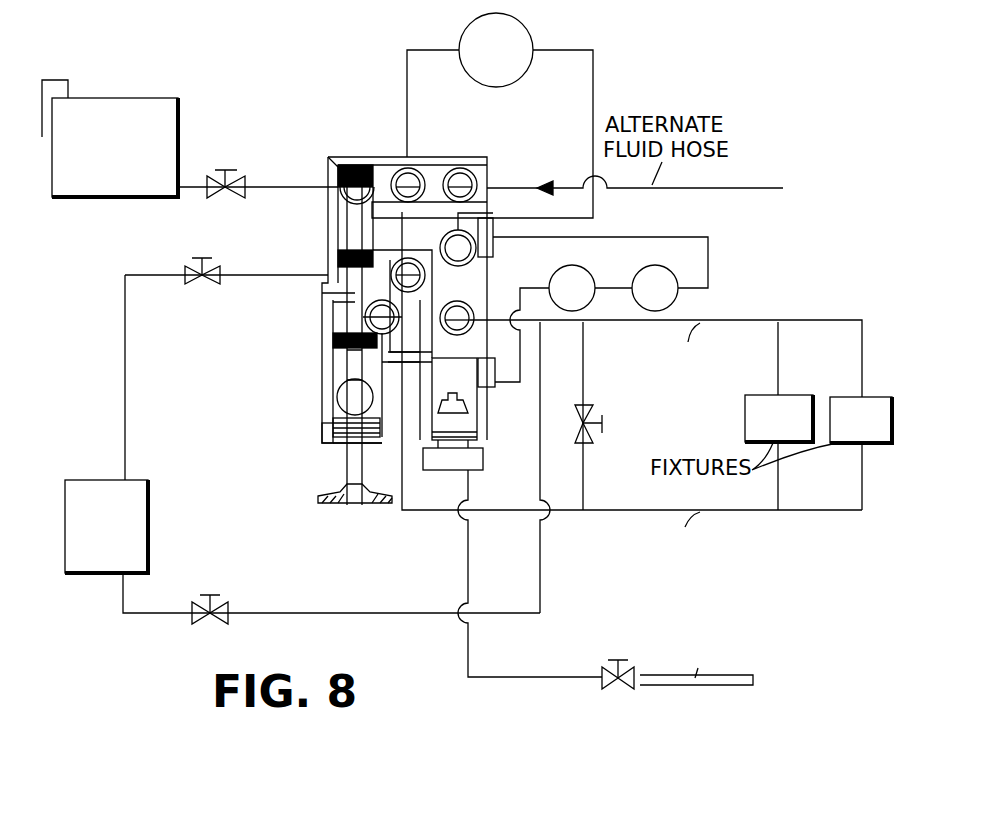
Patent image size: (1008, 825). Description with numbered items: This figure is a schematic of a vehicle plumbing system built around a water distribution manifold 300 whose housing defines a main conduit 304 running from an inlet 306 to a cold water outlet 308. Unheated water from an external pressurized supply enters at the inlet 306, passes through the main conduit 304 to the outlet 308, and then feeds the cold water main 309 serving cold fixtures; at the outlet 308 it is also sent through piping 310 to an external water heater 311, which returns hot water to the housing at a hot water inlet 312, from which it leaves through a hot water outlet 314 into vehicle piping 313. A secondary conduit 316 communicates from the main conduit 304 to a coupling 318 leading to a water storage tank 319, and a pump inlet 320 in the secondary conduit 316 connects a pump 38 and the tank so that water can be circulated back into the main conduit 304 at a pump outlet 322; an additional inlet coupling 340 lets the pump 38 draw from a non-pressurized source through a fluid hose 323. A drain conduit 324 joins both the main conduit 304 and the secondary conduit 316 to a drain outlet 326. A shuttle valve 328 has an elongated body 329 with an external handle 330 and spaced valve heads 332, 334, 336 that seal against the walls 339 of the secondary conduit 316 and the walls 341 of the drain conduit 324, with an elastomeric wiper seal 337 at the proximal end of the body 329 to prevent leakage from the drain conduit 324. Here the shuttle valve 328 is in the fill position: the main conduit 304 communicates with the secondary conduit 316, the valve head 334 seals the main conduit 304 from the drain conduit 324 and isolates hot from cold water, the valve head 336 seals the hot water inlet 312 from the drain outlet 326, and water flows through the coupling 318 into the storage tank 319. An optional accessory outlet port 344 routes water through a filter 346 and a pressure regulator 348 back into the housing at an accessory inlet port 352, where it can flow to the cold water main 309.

The pump 38 is at (515, 30).
The water distribution manifold 300 is at (478, 132).
The main conduit 304 is at (480, 430).
The inlet 306 is at (470, 460).
The cold water outlet 308 is at (462, 330).
The cold water main 309 is at (750, 320).
The piping 310 is at (540, 587).
The water heater 311 is at (148, 512).
The hot water inlet 312 is at (410, 275).
The vehicle piping 313 is at (787, 513).
The hot water outlet 314 is at (355, 320).
The secondary conduit 316 is at (383, 176).
The coupling 318 is at (338, 195).
The water storage tank 319 is at (140, 98).
The pump inlet 320 is at (408, 180).
The pump outlet 322 is at (445, 245).
The fluid hose 323 is at (745, 188).
The drain conduit 324 is at (330, 370).
The drain outlet 326 is at (340, 400).
The shuttle valve 328 is at (333, 462).
The elongated body 329 is at (357, 292).
The external handle 330 is at (358, 505).
The valve head 332 is at (332, 162).
The valve head 334 is at (338, 257).
The valve head 336 is at (333, 340).
The elastomeric wiper seal 337 is at (375, 445).
The walls of the secondary conduit 339 is at (330, 226).
The additional inlet coupling 340 is at (465, 187).
The walls of the drain conduit 341 is at (384, 374).
The accessory outlet port 344 is at (486, 388).
The filter 346 is at (585, 278).
The pressure regulator 348 is at (670, 277).
The accessory inlet port 352 is at (493, 225).